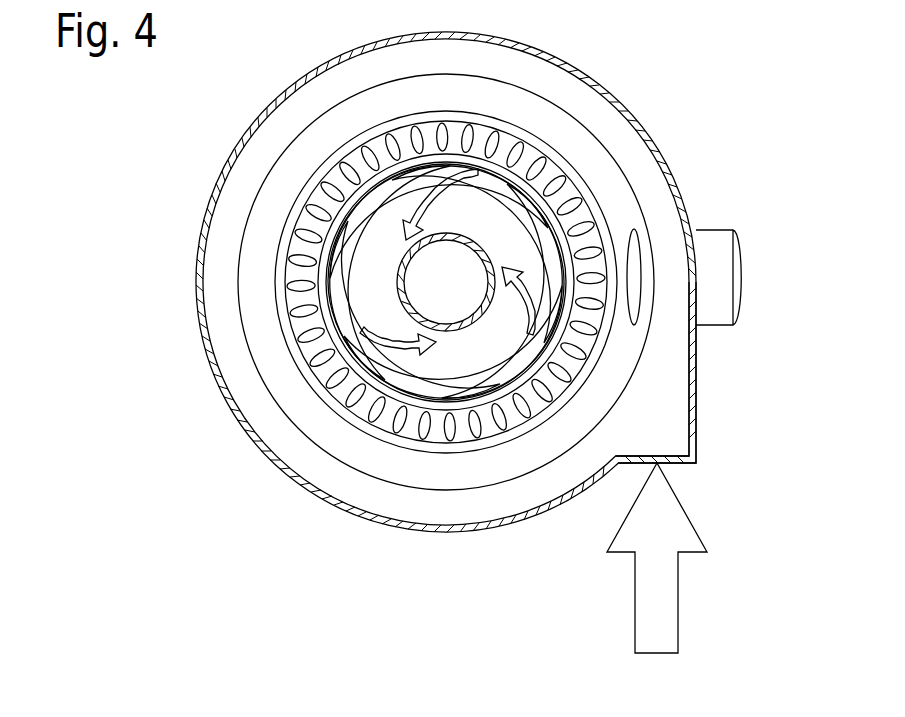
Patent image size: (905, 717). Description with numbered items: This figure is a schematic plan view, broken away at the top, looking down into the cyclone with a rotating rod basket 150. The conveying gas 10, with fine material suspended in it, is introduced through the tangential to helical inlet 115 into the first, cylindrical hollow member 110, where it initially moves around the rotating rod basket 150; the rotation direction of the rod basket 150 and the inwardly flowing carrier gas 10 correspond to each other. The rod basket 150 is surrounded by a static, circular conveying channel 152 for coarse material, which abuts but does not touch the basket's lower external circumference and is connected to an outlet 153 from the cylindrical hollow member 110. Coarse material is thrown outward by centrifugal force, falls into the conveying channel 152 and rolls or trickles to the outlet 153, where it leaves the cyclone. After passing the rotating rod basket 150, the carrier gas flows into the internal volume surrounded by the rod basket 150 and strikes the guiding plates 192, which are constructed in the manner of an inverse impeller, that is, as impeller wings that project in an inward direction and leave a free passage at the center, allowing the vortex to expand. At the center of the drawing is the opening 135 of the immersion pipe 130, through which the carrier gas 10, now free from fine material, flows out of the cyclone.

The conveying gas 10 is at (657, 575).
The first, cylindrical hollow member 110 is at (667, 153).
The tangential or helical inlet 115 is at (682, 415).
The immersion pipe 130 is at (402, 257).
The opening of the immersion pipe 135 is at (440, 292).
The rotating rod basket 150 is at (513, 138).
The conveying channel for coarse material 152 is at (598, 157).
The outlet for coarse material 153 is at (727, 273).
The guiding plates 192 is at (352, 277).